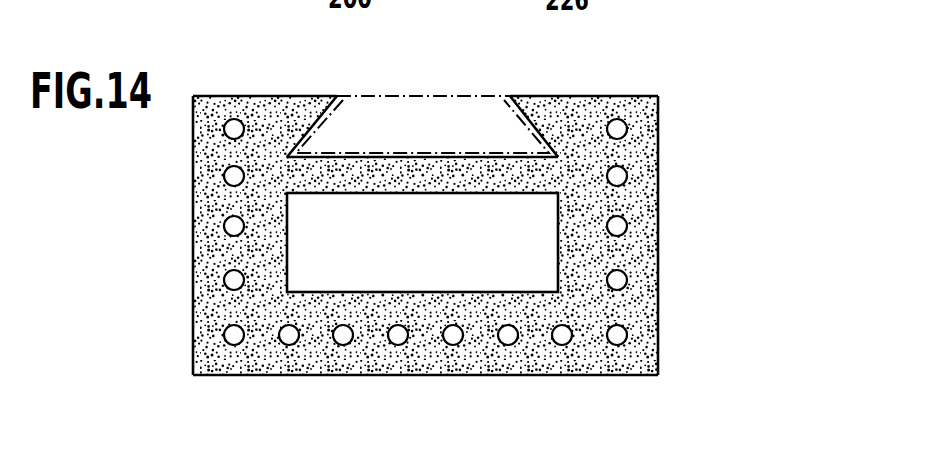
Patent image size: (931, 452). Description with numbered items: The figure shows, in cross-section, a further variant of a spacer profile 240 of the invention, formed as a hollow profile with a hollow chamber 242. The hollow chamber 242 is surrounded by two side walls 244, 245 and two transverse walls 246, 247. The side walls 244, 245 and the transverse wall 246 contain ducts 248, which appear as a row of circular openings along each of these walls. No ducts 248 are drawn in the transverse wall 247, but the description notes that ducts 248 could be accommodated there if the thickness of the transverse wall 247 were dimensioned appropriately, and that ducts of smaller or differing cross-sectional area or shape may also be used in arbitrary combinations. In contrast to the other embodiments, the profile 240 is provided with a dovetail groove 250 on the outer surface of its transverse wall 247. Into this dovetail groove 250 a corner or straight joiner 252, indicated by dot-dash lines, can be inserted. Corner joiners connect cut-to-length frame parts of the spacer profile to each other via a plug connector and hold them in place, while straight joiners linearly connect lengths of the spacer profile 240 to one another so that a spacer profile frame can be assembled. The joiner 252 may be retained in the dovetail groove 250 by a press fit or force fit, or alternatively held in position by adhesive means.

The spacer profile 240 is at (683, 187).
The hollow chamber 242 is at (408, 260).
The side wall 244 is at (182, 232).
The side wall 245 is at (662, 140).
The transverse wall 246 is at (503, 375).
The transverse wall 247 is at (455, 198).
The duct 248 is at (608, 280).
The dovetail groove 250 is at (603, 97).
The corner or straight joiner 252 is at (458, 95).